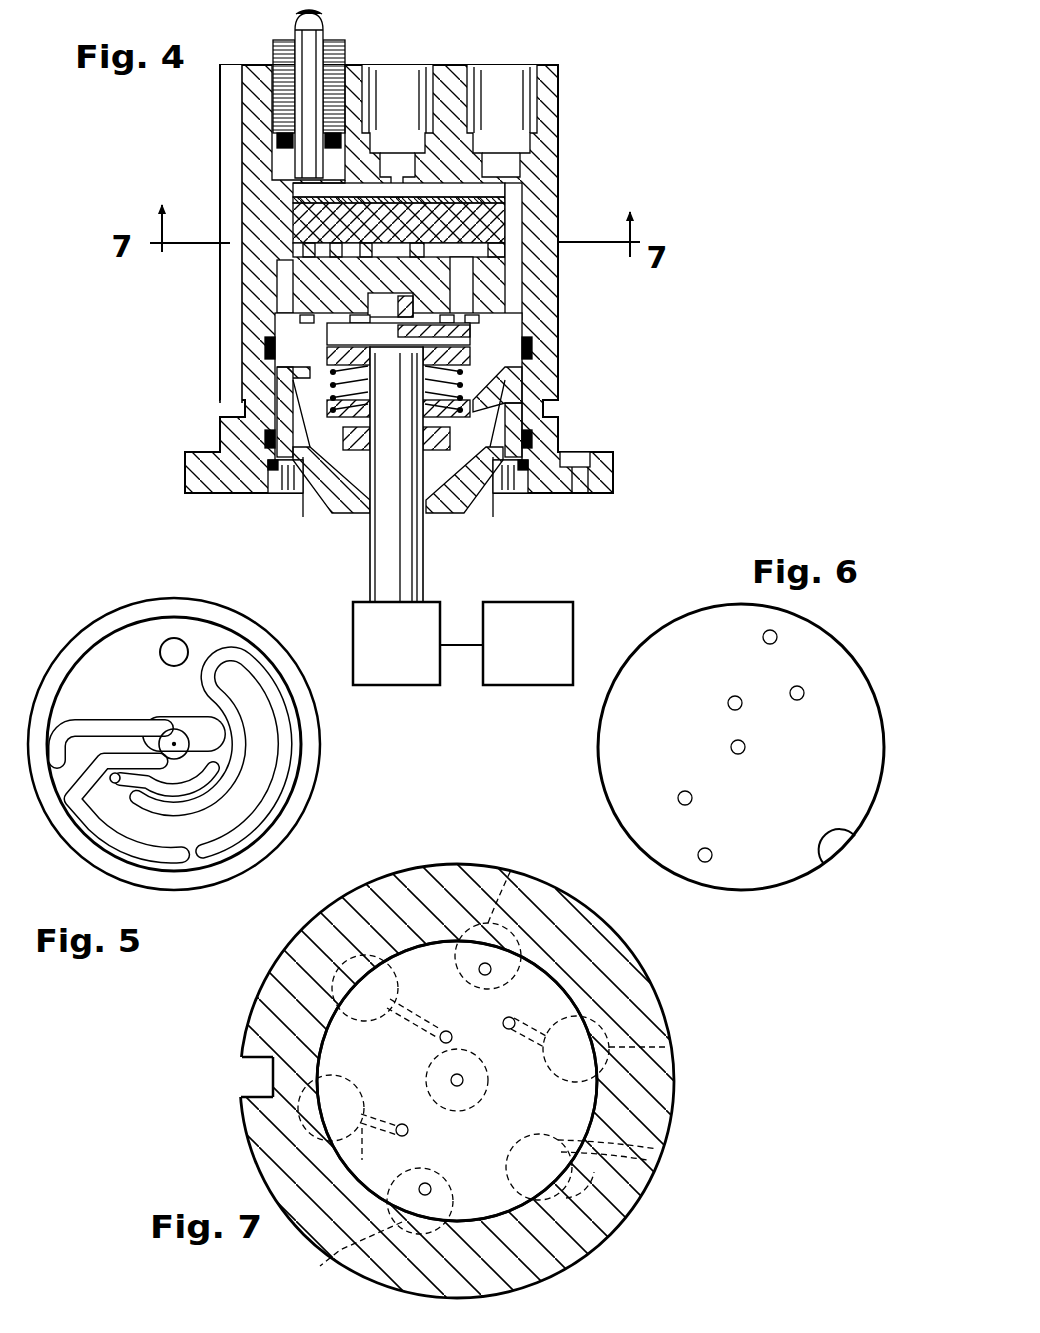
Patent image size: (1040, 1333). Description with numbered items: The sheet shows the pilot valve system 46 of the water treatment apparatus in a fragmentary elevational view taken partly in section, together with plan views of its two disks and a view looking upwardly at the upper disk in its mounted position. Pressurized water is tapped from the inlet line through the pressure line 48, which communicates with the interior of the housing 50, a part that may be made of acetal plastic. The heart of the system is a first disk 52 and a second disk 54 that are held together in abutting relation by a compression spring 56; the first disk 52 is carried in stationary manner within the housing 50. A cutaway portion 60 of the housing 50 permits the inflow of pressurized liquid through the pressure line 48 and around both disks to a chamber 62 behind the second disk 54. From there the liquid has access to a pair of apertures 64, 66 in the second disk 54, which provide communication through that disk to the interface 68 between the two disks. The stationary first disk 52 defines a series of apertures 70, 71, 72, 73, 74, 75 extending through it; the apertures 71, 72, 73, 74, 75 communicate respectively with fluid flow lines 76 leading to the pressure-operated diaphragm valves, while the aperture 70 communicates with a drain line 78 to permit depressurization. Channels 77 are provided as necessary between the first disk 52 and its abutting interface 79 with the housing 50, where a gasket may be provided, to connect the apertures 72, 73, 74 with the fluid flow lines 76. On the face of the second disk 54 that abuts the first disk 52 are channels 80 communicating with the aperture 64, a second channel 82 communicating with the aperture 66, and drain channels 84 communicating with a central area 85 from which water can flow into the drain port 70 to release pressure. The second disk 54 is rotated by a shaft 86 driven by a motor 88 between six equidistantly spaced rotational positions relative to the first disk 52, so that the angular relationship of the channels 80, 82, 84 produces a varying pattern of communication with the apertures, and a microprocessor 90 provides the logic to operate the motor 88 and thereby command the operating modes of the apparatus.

In FIG. 4, the pilot valve system 46 is at (215, 105).
In FIG. 4, the pressure line 48 is at (522, 70).
In FIG. 7, the pressure line 48 is at (657, 1151).
In FIG. 4, the housing 50 is at (565, 148).
In FIG. 7, the housing 50 is at (630, 975).
In FIG. 4, the first disk 52 is at (298, 232).
In FIG. 6, the first disk 52 is at (644, 702).
In FIG. 7, the first disk 52 is at (498, 1135).
In FIG. 4, the second disk 54 is at (305, 292).
In FIG. 5, the second disk 54 is at (103, 610).
In FIG. 4, the compression spring 56 is at (513, 377).
In FIG. 4, the cutaway portion 60 is at (512, 218).
In FIG. 6, the cutaway portion 60 is at (843, 870).
In FIG. 7, the cutaway portion 60 is at (577, 1174).
In FIG. 4, the chamber 62 is at (300, 355).
In FIG. 4, the aperture 64 is at (467, 290).
In FIG. 5, the aperture 64 is at (178, 640).
In FIG. 5, the aperture 66 is at (112, 782).
In FIG. 4, the interface 68 is at (505, 243).
In FIG. 6, the aperture 70 is at (742, 753).
In FIG. 7, the aperture 70 is at (463, 1079).
In FIG. 6, the aperture 71 is at (712, 855).
In FIG. 7, the aperture 71 is at (431, 1188).
In FIG. 6, the aperture 72 is at (692, 800).
In FIG. 7, the aperture 72 is at (408, 1130).
In FIG. 6, the aperture 73 is at (742, 705).
In FIG. 7, the aperture 73 is at (448, 1031).
In FIG. 6, the aperture 74 is at (804, 694).
In FIG. 7, the aperture 74 is at (510, 1017).
In FIG. 6, the aperture 75 is at (777, 637).
In FIG. 7, the aperture 75 is at (492, 967).
In FIG. 4, the fluid flow lines 76 is at (296, 28).
In FIG. 7, the fluid flow lines 76 is at (514, 869).
In FIG. 7, the channels 77 is at (386, 1044).
In FIG. 4, the drain line 78 is at (417, 70).
In FIG. 7, the drain line 78 is at (488, 1092).
In FIG. 4, the abutting interface 79 is at (293, 205).
In FIG. 5, the channels 80 is at (292, 776).
In FIG. 5, the second channel 82 is at (192, 797).
In FIG. 5, the drain channels 84 is at (265, 822).
In FIG. 5, the central area 85 is at (168, 730).
In FIG. 4, the shaft 86 is at (424, 545).
In FIG. 4, the motor 88 is at (411, 658).
In FIG. 4, the microprocessor 90 is at (543, 658).